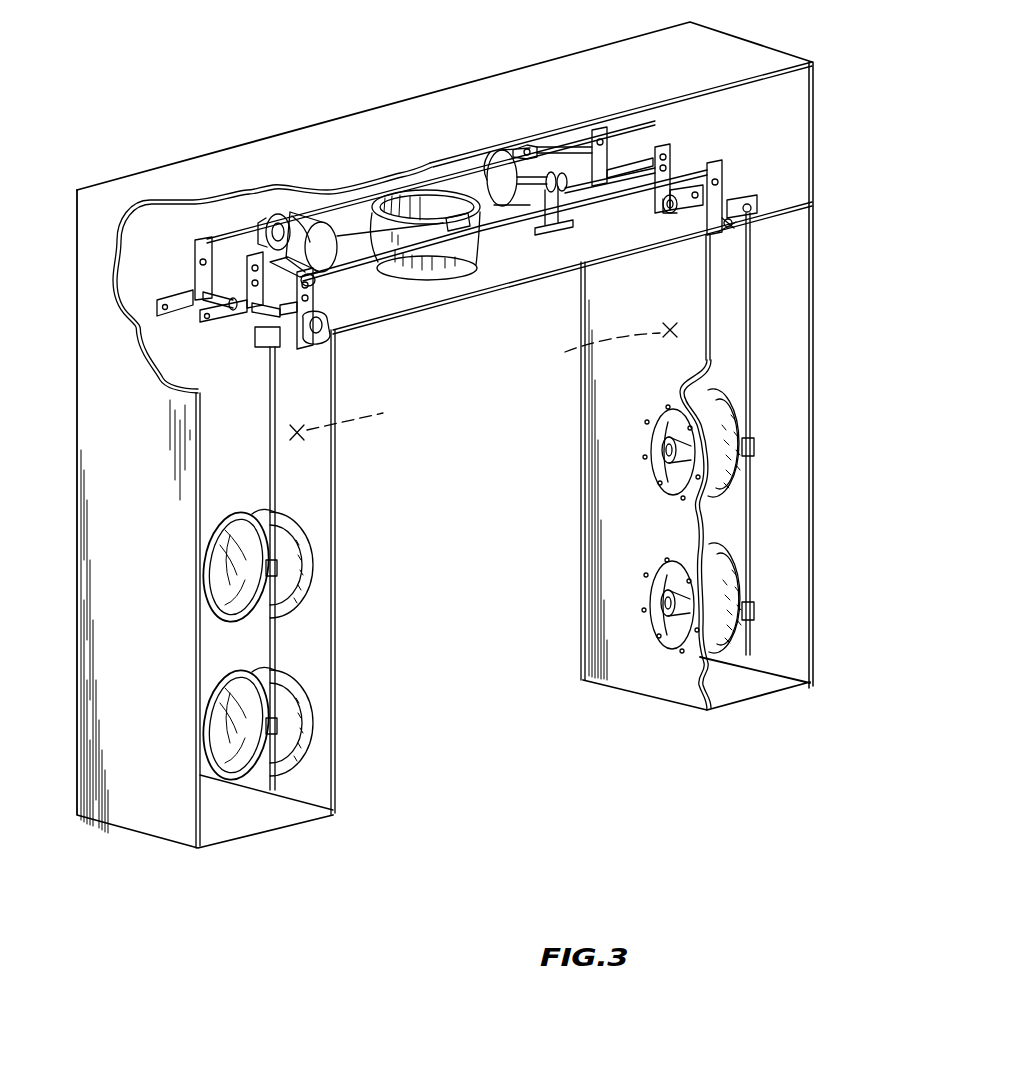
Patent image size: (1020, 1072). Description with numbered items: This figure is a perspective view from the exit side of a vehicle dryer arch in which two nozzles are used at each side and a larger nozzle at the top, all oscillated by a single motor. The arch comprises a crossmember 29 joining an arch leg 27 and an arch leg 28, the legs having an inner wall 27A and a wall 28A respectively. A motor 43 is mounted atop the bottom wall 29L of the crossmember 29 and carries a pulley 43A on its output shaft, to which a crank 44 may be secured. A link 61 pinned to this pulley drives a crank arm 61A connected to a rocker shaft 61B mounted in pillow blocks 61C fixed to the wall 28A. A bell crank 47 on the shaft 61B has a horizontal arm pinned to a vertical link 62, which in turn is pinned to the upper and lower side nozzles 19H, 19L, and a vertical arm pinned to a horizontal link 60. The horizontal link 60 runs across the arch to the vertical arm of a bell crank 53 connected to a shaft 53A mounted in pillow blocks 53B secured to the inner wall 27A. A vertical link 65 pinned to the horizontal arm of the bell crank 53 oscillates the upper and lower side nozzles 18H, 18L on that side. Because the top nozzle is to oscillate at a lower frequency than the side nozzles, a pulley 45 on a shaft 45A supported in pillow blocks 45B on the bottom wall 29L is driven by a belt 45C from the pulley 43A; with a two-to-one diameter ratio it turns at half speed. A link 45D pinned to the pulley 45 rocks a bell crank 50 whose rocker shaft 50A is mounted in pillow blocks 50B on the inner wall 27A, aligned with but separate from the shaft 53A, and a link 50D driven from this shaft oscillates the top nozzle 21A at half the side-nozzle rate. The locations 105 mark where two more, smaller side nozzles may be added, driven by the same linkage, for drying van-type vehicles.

The upper side nozzle 18H is at (668, 450).
The lower side nozzle 18L is at (667, 617).
The upper side nozzle 19H is at (236, 568).
The lower side nozzle 19L is at (297, 729).
The top nozzle 21A is at (427, 205).
The arch leg 27 is at (840, 547).
The inner wall of arch leg 27A is at (620, 537).
The arch leg 28 is at (102, 828).
The wall of arch leg 28A is at (333, 632).
The arch crossmember 29 is at (383, 123).
The bottom wall of arch crossmember 29L is at (558, 262).
The motor 43 is at (322, 233).
The pulley 43A is at (279, 218).
The crank 44 is at (267, 228).
The pulley 45 is at (507, 173).
The shaft 45A is at (543, 178).
The pillow blocks 45B is at (612, 162).
The belt 45C is at (313, 213).
The link 45D is at (567, 148).
The bell crank 47 is at (337, 307).
The bell crank 50 is at (640, 107).
The rocker shaft 50A is at (640, 204).
The pillow blocks 50B is at (670, 214).
The link 50D is at (497, 207).
The bell crank 53 is at (720, 187).
The shaft 53A is at (750, 217).
The pillow blocks 53B is at (723, 227).
The horizontal link 60 is at (680, 172).
The link 61 is at (230, 233).
The crank arm 61A is at (203, 275).
The rocker shaft 61B is at (270, 312).
The pillow blocks 61C is at (162, 325).
The vertical link 62 is at (277, 458).
The vertical link 65 is at (752, 333).
The locations for additional side nozzles 105 is at (483, 381).